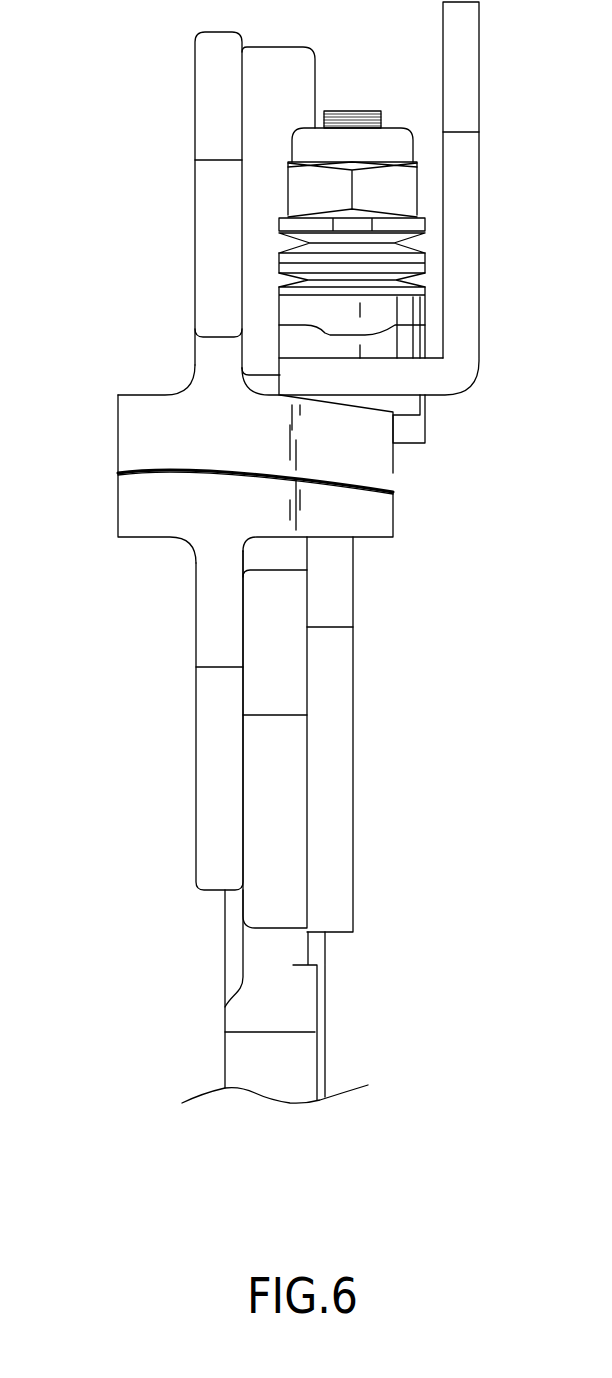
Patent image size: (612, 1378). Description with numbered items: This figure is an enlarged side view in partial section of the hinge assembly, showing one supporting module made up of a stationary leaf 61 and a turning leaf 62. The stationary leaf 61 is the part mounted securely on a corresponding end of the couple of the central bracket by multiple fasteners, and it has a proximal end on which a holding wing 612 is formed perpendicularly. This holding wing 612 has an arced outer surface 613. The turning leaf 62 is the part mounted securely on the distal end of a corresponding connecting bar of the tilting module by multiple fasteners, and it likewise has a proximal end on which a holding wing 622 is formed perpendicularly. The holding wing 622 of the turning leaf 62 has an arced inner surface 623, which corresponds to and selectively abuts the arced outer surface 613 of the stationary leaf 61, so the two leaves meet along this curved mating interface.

The stationary leaf 61 is at (204, 787).
The turning leaf 62 is at (200, 192).
The holding wing 612 is at (125, 540).
The arced outer surface 613 is at (120, 480).
The holding wing 622 is at (126, 424).
The arced inner surface 623 is at (118, 473).